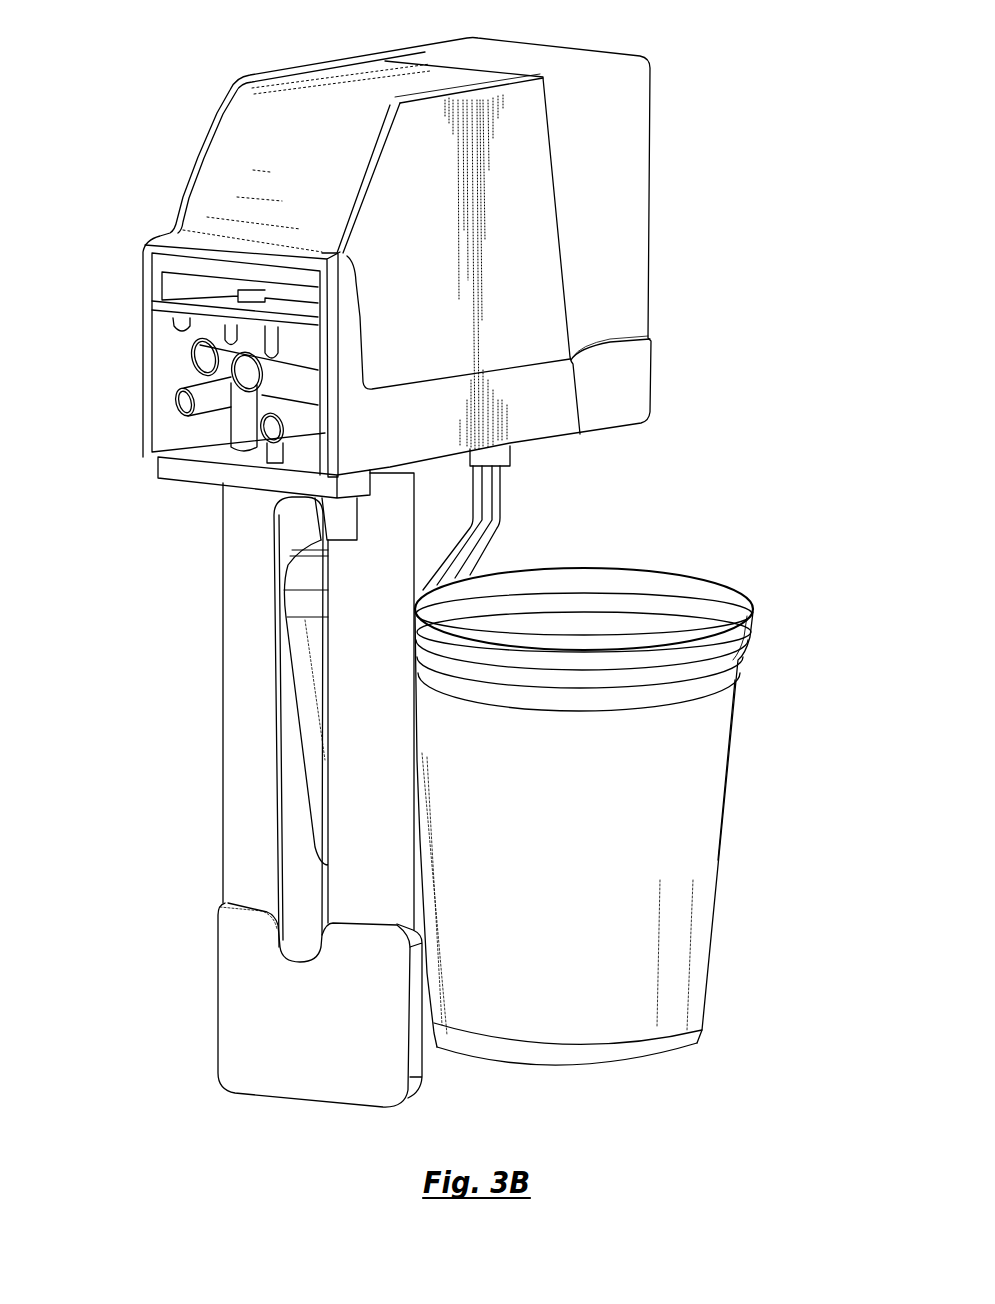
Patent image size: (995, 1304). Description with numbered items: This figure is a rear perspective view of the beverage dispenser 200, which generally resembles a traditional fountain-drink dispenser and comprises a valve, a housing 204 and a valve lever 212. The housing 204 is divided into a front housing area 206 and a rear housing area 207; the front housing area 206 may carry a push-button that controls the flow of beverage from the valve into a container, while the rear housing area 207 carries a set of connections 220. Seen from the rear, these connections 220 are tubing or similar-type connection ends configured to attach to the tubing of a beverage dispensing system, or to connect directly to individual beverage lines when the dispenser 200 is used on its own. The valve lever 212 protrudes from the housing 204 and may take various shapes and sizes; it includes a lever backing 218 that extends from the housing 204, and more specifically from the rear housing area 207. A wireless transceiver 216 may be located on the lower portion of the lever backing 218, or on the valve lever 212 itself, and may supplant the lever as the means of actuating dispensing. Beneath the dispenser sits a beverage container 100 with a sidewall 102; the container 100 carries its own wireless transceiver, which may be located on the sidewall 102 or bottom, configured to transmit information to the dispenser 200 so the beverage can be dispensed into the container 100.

The beverage dispenser 200 is at (748, 114).
The housing 204 is at (503, 294).
The front housing area 206 is at (600, 197).
The rear housing area 207 is at (305, 140).
The valve lever 212 is at (300, 607).
The wireless transceiver 216 is at (287, 1012).
The lever backing 218 is at (253, 698).
The connections 220 is at (238, 345).
The beverage container 100 is at (615, 929).
The sidewall 102 is at (720, 800).